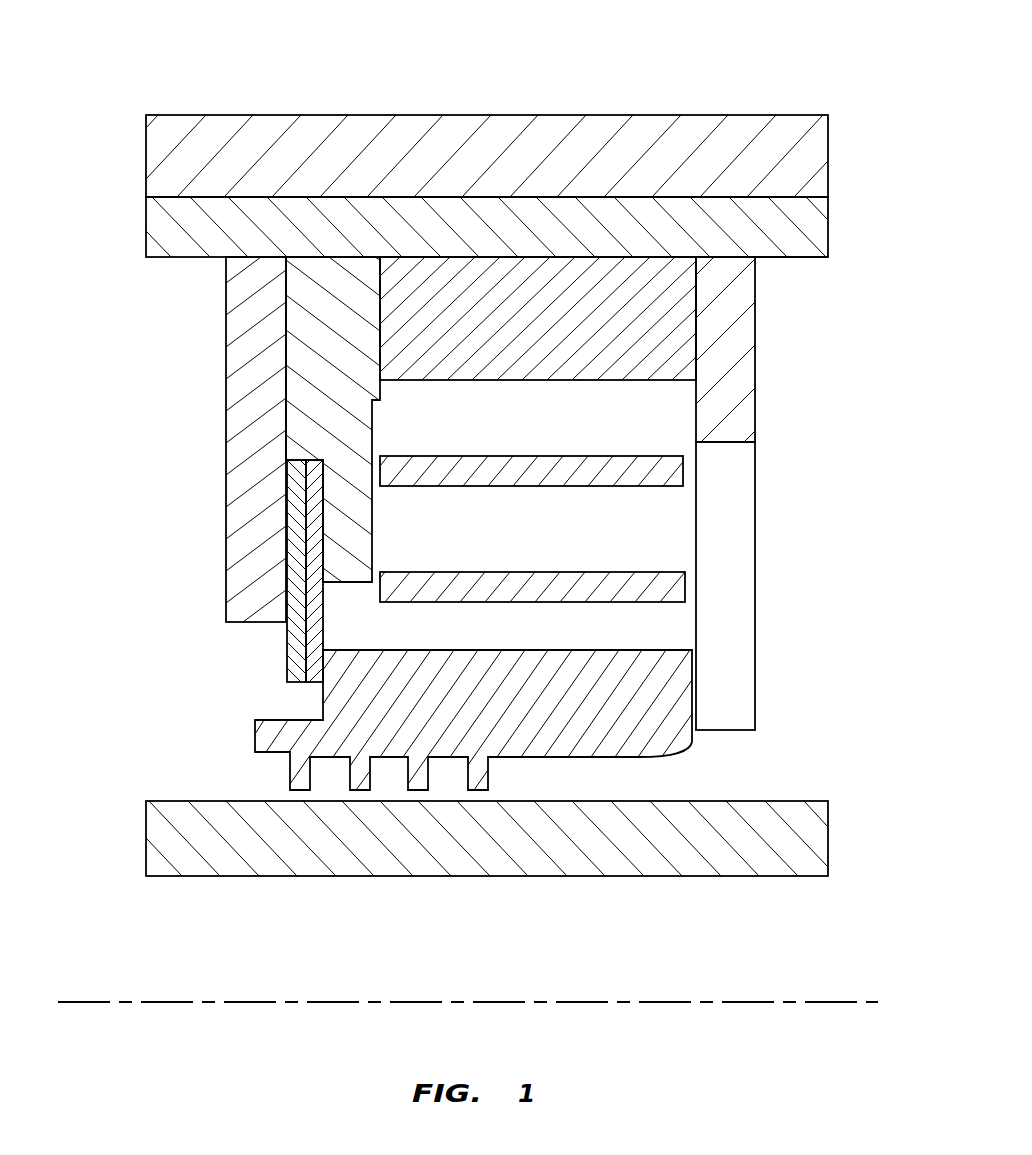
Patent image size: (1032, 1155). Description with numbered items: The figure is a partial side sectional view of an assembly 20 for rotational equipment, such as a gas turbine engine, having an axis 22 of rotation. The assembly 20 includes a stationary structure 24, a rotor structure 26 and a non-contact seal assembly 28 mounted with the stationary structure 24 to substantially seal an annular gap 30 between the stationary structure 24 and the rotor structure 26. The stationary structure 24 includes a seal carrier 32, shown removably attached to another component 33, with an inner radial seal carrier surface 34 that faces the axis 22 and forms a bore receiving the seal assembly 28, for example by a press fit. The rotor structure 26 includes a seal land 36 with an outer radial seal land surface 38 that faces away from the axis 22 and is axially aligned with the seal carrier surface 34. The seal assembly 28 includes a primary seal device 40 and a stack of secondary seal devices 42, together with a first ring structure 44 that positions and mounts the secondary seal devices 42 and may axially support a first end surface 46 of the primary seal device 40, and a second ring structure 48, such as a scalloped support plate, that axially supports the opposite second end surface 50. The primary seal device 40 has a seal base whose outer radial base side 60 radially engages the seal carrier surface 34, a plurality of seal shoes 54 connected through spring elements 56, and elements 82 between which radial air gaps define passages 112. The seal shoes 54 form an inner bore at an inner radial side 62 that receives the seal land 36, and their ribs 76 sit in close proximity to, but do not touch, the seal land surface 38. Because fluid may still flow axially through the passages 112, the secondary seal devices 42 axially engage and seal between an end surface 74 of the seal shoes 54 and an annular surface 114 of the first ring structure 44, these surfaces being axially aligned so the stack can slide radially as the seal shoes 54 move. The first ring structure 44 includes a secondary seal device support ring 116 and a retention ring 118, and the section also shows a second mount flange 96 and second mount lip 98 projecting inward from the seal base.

The assembly 20 is at (473, 459).
The axis 22 is at (850, 1006).
The stationary structure 24 is at (472, 494).
The rotor structure 26 is at (473, 815).
The non-contact seal assembly 28 is at (467, 537).
The annular gap 30 is at (156, 683).
The seal carrier 32 is at (828, 222).
The component of the stationary structure 33 is at (828, 150).
The seal carrier surface 34 is at (828, 262).
The seal land 36 is at (828, 840).
The seal land surface 38 is at (160, 800).
The primary seal device 40 is at (608, 760).
The secondary seal devices 42 is at (305, 630).
The first ring structure 44 is at (226, 348).
The first end surface 46 is at (372, 298).
The second ring structure 48 is at (757, 348).
The second end surface 50 is at (705, 290).
The seal shoes 54 is at (660, 748).
The spring elements 56 is at (688, 565).
The outer radial base side 60 is at (488, 256).
The inner radial side 62 is at (567, 254).
The end surface 74 is at (323, 690).
The ribs 76 is at (300, 792).
The elements 82 is at (575, 456).
The second mount flange 96 is at (372, 405).
The second mount lip 98 is at (226, 458).
The passages 112 is at (548, 430).
The annular surface 114 is at (300, 548).
The secondary seal device support ring 116 is at (340, 254).
The retention ring 118 is at (262, 254).